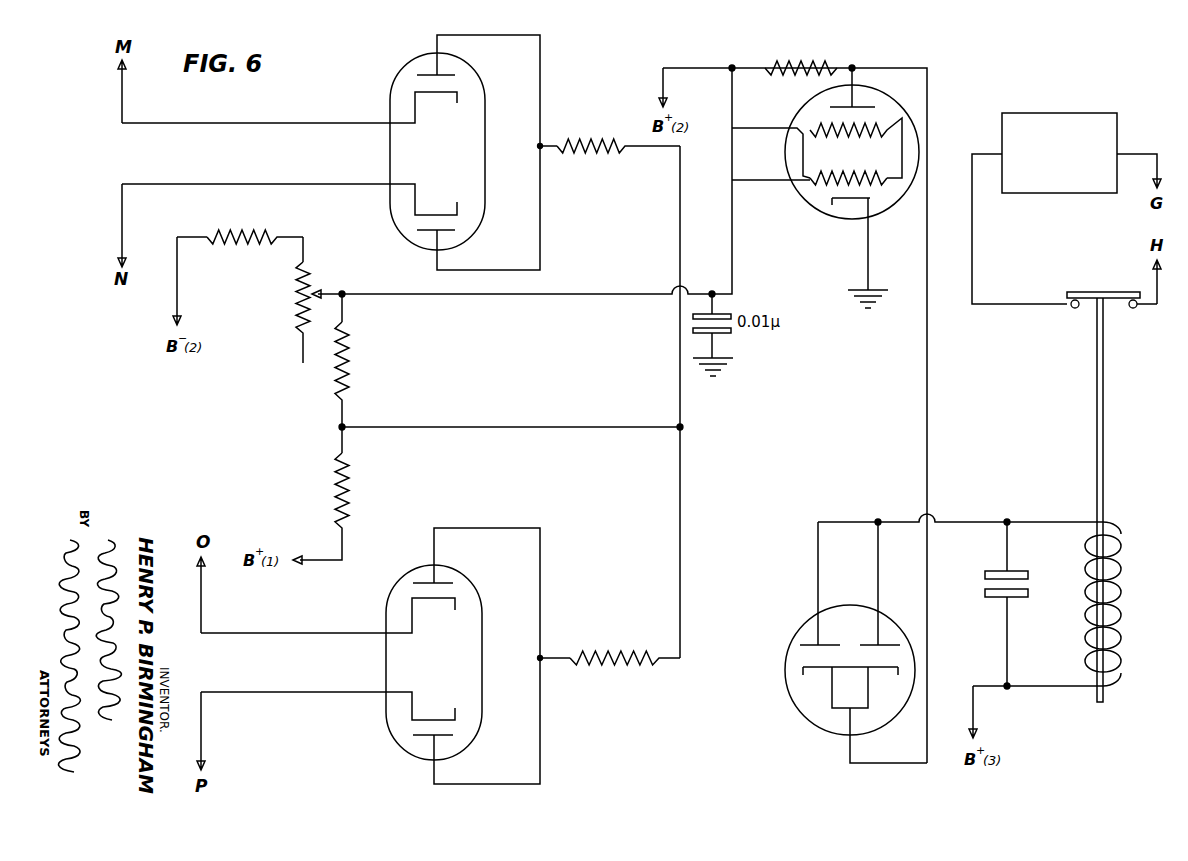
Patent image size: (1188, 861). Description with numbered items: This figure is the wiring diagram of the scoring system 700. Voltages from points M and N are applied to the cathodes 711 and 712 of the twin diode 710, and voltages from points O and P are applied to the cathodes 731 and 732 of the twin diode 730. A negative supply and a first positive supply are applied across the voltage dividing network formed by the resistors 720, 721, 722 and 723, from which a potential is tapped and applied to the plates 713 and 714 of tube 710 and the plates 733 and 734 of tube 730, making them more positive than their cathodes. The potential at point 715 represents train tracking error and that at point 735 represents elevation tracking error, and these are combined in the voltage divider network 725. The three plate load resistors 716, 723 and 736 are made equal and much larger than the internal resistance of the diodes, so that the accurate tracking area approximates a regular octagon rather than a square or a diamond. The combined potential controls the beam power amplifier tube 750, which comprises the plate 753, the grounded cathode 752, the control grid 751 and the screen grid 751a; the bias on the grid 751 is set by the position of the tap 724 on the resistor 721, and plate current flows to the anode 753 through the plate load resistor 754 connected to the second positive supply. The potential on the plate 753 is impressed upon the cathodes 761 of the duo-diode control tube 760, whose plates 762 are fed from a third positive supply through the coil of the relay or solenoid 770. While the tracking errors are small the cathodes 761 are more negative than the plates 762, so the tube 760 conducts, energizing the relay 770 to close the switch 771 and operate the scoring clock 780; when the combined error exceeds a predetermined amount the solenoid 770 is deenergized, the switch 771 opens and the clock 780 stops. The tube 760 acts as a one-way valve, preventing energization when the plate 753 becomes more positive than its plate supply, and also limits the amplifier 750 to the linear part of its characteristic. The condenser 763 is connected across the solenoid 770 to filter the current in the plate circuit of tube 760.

The scoring system 700 is at (772, 398).
The twin diode 710 is at (390, 158).
The cathode 711 is at (452, 101).
The cathode 712 is at (441, 210).
The plate 713 is at (433, 72).
The plate 714 is at (445, 235).
The point 715 is at (543, 145).
The plate load resistor 716 is at (596, 153).
The resistor 720 is at (245, 229).
The resistor 721 is at (299, 295).
The resistor 722 is at (352, 382).
The resistor 723 is at (352, 493).
The tap 724 is at (345, 291).
The voltage divider network 725 is at (283, 358).
The twin diode 730 is at (386, 665).
The cathode 731 is at (456, 602).
The cathode 732 is at (456, 713).
The plate 733 is at (430, 580).
The plate 734 is at (419, 741).
The point 735 is at (542, 656).
The plate load resistor 736 is at (603, 653).
The beam power amplifier tube 750 is at (786, 158).
The control grid 751 is at (868, 204).
The screen grid 751a is at (902, 120).
The cathode 752 is at (847, 199).
The plate 753 is at (862, 106).
The plate load resistor 754 is at (794, 81).
The control tube 760 is at (829, 731).
The cathodes 761 is at (812, 674).
The plates 762 is at (811, 641).
The condenser 763 is at (991, 570).
The solenoid 770 is at (1122, 585).
The switch 771 is at (1087, 291).
The scoring clock 780 is at (1090, 122).